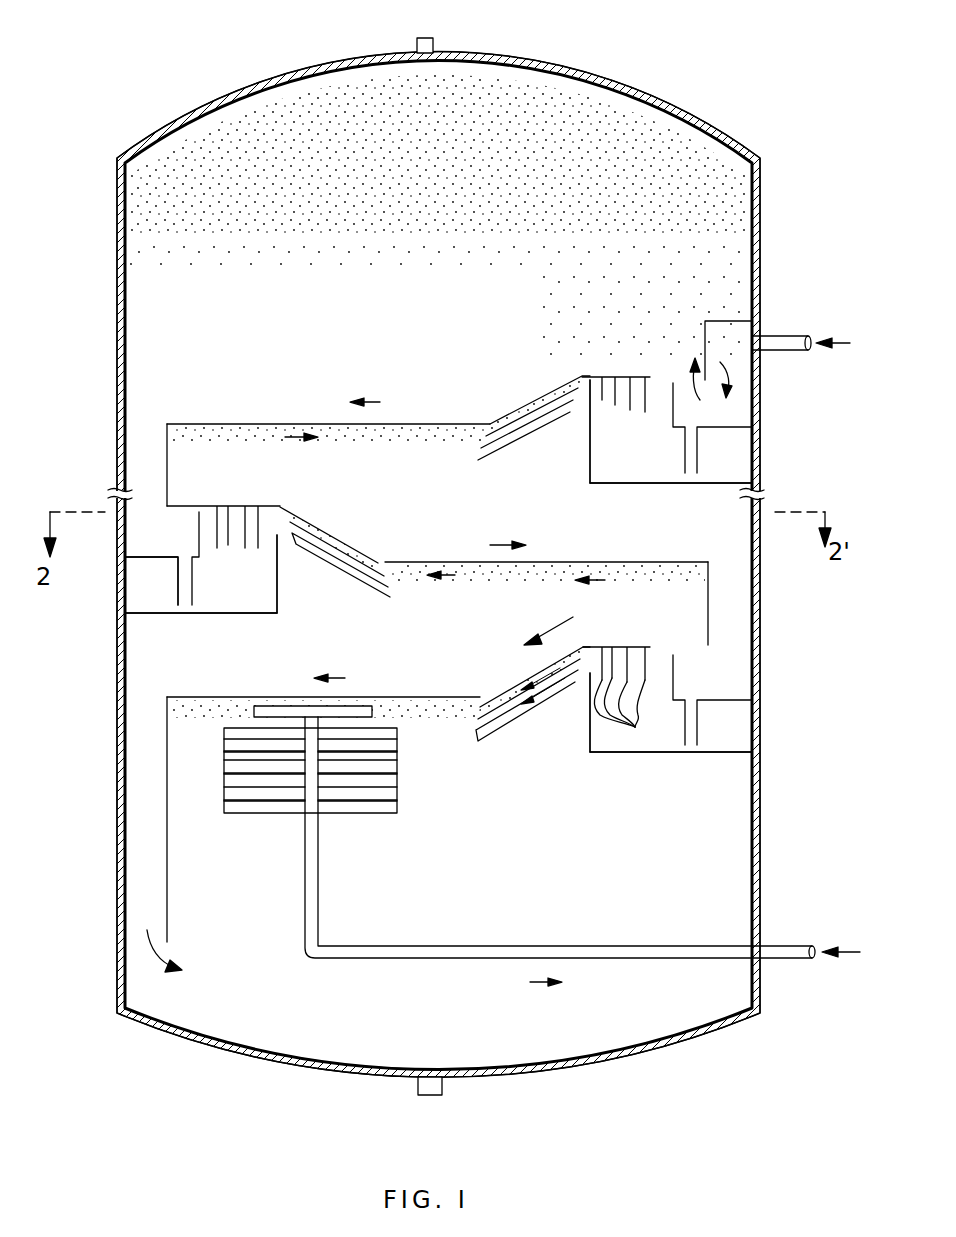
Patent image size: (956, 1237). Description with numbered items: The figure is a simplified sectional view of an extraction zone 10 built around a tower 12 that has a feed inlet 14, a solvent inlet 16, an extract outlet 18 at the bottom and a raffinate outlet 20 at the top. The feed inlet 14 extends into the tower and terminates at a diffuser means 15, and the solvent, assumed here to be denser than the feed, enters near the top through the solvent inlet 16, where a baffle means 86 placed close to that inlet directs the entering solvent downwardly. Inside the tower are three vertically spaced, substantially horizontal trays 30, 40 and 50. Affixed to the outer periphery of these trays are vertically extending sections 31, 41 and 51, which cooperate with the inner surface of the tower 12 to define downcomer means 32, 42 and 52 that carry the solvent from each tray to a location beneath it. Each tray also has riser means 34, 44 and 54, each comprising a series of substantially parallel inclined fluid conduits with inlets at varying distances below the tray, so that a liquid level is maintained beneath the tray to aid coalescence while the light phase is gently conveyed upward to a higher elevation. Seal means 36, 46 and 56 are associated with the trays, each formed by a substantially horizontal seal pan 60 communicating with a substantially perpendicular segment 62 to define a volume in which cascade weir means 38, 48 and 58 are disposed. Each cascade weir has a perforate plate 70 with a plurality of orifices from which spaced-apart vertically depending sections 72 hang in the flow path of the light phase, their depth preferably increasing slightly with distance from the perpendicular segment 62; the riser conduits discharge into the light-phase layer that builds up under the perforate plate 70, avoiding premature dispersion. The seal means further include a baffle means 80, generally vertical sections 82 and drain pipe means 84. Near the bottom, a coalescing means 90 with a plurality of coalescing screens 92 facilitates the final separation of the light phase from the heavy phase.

The extraction zone 10 is at (790, 652).
The tower 12 is at (758, 742).
The feed inlet 14 is at (440, 948).
The diffuser means 15 is at (276, 706).
The solvent inlet 16 is at (788, 338).
The extract outlet 18 is at (418, 1087).
The raffinate outlet 20 is at (433, 46).
The tray 30 is at (485, 722).
The vertically extending section 31 is at (167, 806).
The downcomer means 32 is at (140, 754).
The riser means 34 is at (518, 684).
The seal means 36 is at (638, 704).
The cascade weir means 38 is at (632, 684).
The tray 40 is at (480, 565).
The vertically extending section 41 is at (708, 632).
The downcomer means 42 is at (735, 601).
The riser means 44 is at (345, 557).
The seal means 46 is at (236, 557).
The cascade weir means 48 is at (228, 540).
The tray 50 is at (460, 424).
The vertically extending section 51 is at (167, 470).
The downcomer means 52 is at (145, 437).
The riser means 54 is at (567, 376).
The seal means 56 is at (590, 484).
The cascade weir means 58 is at (632, 403).
The seal pan 60 is at (652, 483).
The perpendicular segment 62 is at (590, 460).
The perforate plate 70 is at (598, 377).
The vertically depending sections 72 is at (625, 716).
The baffle means 80 is at (740, 427).
The generally vertical sections 82 is at (673, 387).
The drain pipe means 84 is at (697, 455).
The baffle means 86 is at (734, 321).
The coalescing means 90 is at (336, 777).
The coalescing screens 92 is at (397, 758).